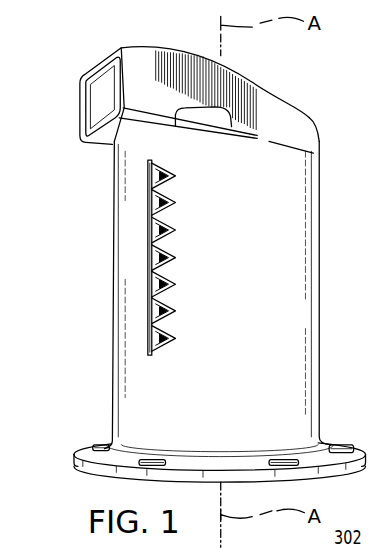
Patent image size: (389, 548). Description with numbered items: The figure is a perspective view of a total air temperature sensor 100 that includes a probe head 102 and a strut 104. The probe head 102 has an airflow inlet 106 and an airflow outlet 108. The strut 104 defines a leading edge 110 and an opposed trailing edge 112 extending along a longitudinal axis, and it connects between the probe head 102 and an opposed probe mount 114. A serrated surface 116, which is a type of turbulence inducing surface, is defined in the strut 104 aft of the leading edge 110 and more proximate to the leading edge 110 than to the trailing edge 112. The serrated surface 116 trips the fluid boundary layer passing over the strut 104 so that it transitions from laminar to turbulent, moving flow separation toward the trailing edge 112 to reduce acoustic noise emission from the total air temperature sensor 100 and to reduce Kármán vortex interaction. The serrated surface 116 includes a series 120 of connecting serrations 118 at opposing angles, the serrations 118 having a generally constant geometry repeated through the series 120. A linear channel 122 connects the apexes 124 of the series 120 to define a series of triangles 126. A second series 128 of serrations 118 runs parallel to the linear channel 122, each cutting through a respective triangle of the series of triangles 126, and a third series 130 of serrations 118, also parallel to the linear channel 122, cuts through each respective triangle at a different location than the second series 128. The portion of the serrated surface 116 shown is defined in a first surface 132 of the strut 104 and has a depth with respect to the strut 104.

The total air temperature sensor 100 is at (282, 82).
The probe head 102 is at (170, 72).
The strut 104 is at (283, 285).
The airflow inlet 106 is at (98, 93).
The airflow outlet 108 is at (318, 132).
The leading edge 110 is at (108, 383).
The trailing edge 112 is at (318, 335).
The probe mount 114 is at (107, 460).
The serrated surface 116 is at (207, 273).
The serrations 118 is at (157, 246).
The series of connecting serrations 120 is at (171, 183).
The linear channel 122 is at (147, 283).
The apexes 124 is at (147, 282).
The series of triangles 126 is at (173, 346).
The second series of serrations 128 is at (153, 173).
The third series of serrations 130 is at (156, 178).
The first surface 132 is at (270, 232).